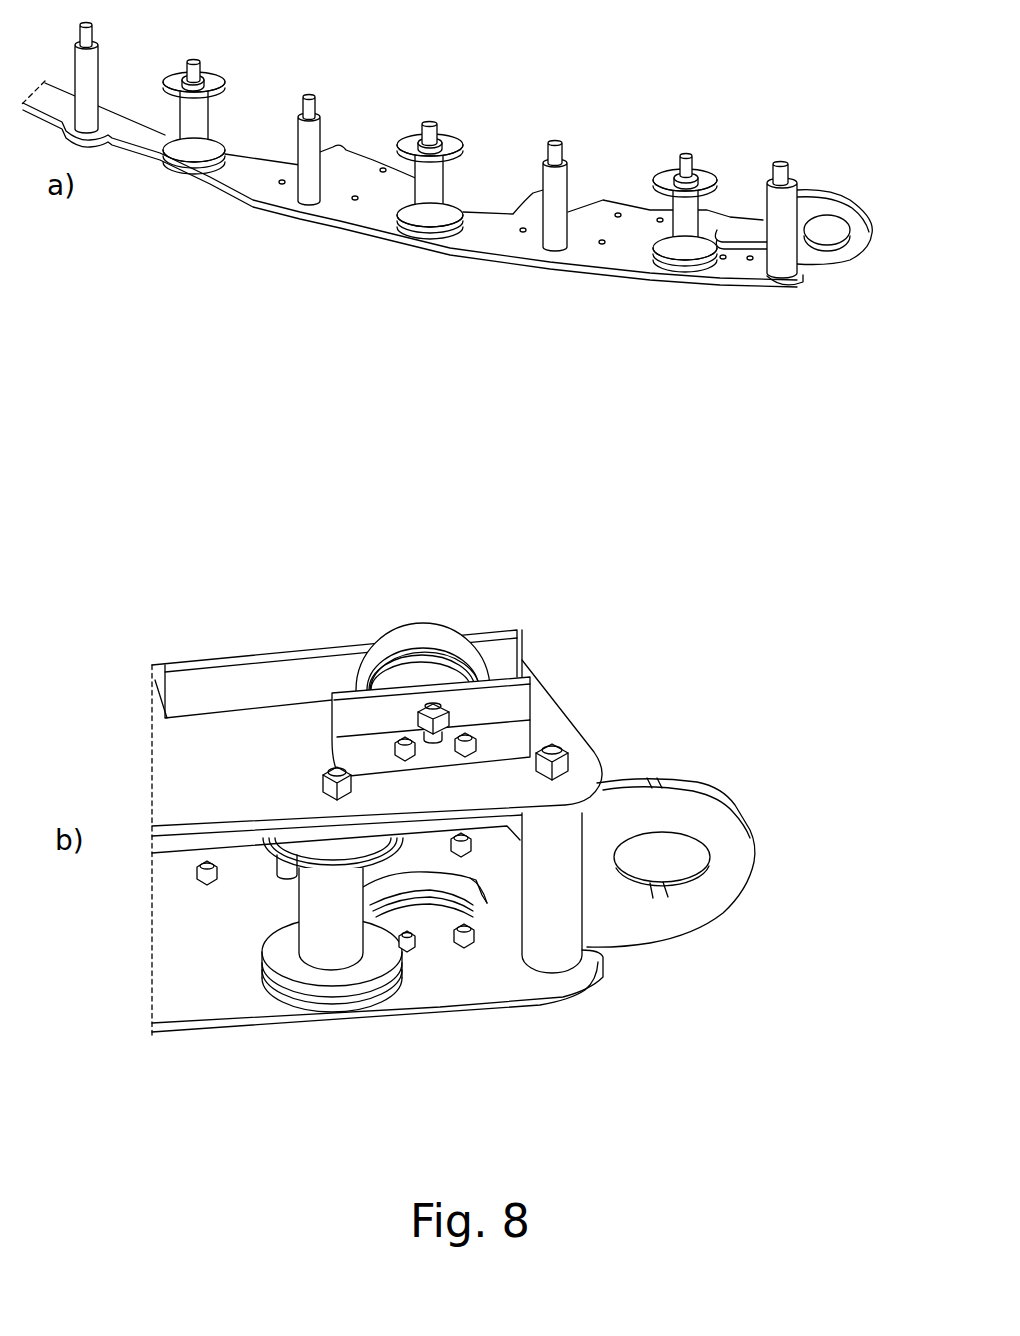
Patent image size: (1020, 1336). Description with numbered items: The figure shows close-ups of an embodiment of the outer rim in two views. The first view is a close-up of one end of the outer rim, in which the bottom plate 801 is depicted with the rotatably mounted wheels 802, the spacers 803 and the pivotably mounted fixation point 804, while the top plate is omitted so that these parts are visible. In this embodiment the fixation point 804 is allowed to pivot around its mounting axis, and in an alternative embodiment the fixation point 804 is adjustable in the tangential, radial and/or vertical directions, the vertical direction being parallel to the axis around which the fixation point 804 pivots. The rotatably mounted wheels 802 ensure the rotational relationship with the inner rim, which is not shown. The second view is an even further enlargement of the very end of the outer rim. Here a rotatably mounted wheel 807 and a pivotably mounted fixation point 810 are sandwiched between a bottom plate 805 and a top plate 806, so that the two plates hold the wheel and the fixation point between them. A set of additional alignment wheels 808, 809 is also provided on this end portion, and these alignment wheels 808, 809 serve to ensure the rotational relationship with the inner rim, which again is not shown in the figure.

The bottom plate 801 is at (490, 232).
The rotatably mounted wheels 802 is at (652, 270).
The spacers 803 is at (306, 165).
The pivotably mounted fixation point 804 is at (832, 256).
The bottom plate 805 is at (490, 970).
The top plate 806 is at (557, 727).
The rotatably mounted wheel 807 is at (297, 973).
The alignment wheel 808 is at (443, 887).
The alignment wheel 809 is at (428, 633).
The pivotably mounted fixation point 810 is at (730, 863).